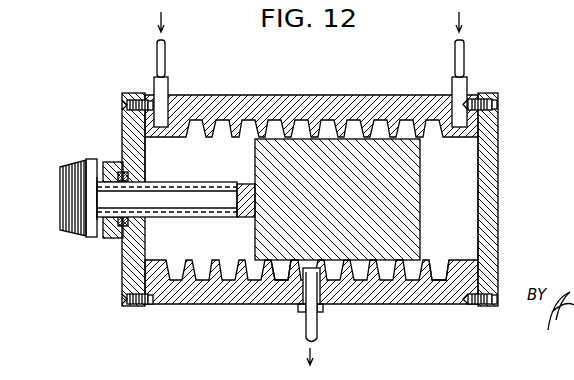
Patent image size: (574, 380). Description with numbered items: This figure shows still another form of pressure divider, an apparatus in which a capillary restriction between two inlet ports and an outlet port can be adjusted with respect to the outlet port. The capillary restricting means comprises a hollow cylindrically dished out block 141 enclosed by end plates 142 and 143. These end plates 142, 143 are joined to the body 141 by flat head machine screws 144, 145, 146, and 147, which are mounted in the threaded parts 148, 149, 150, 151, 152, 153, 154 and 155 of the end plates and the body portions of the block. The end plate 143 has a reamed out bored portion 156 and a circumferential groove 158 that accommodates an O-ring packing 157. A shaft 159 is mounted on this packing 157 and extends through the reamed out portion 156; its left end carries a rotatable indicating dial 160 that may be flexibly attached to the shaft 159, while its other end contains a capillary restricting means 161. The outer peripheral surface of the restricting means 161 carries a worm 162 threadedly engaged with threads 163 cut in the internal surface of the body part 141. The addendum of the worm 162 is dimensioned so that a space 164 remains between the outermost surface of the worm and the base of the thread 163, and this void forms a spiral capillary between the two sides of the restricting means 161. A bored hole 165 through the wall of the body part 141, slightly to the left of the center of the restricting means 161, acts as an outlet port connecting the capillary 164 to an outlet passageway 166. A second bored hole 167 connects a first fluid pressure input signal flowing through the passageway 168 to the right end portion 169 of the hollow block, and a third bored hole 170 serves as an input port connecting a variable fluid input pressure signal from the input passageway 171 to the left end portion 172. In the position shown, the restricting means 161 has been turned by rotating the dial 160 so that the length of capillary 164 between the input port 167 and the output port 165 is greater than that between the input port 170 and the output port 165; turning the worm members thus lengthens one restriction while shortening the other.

The hollow cylindrically dished out block 141 is at (318, 106).
The end plate 142 is at (490, 149).
The end plate 143 is at (132, 130).
The flat head machine screw 144 is at (498, 100).
The flat head machine screw 145 is at (493, 293).
The flat head machine screw 146 is at (127, 297).
The flat head machine screw 147 is at (126, 105).
The threaded part 148 is at (485, 100).
The threaded part 149 is at (474, 100).
The threaded part 150 is at (484, 305).
The threaded part 151 is at (469, 302).
The threaded part 152 is at (140, 305).
The threaded part 153 is at (152, 302).
The threaded part 154 is at (137, 99).
The threaded part 155 is at (144, 99).
The reamed out bored portion 156 is at (143, 230).
The O-ring packing 157 is at (120, 224).
The circumferential groove 158 is at (118, 228).
The shaft 159 is at (178, 186).
The rotatable indicating dial 160 is at (60, 191).
The capillary restricting means 161 is at (405, 185).
The worm 162 is at (370, 262).
The threads 163 is at (445, 272).
The space 164 is at (289, 268).
The bored hole 165 is at (320, 306).
The outlet passageway 166 is at (318, 330).
The second bored hole 167 is at (457, 105).
The passageway 168 is at (454, 52).
The right end portion 169 is at (465, 208).
The third bored hole 170 is at (169, 72).
The input passageway 171 is at (167, 46).
The left end portion 172 is at (165, 156).